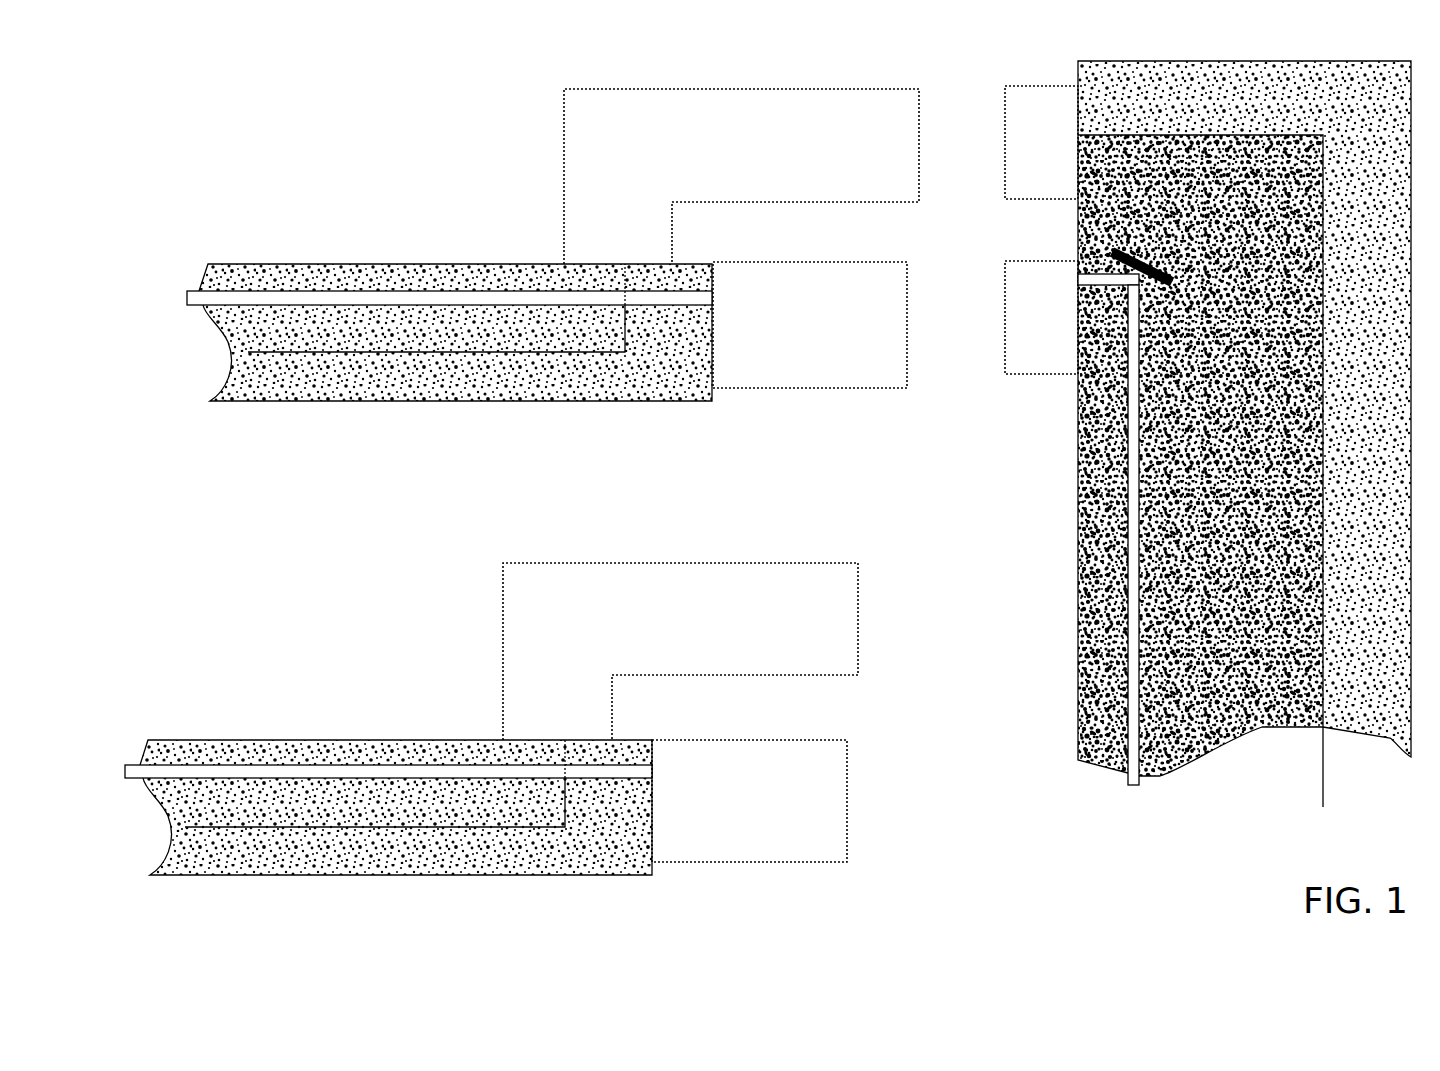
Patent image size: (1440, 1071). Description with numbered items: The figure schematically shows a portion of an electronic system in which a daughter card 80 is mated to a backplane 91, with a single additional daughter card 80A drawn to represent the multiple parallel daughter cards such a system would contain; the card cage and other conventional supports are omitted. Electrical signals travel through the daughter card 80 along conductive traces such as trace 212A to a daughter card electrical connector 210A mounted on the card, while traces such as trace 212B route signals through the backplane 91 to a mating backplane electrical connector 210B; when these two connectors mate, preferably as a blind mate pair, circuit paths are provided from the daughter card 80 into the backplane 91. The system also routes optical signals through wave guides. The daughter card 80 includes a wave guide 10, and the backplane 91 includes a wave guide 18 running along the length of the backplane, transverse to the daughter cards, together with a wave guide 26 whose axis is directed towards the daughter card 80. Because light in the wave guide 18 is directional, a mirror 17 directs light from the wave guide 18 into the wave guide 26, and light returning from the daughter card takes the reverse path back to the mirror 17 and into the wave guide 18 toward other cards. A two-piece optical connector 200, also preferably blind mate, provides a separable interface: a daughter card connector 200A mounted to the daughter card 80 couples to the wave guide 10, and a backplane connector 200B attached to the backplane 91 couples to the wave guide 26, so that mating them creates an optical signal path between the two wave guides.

The wave guide 10 is at (187, 315).
The daughter card 80 is at (382, 263).
The additional daughter card 80A is at (320, 740).
The backplane 91 is at (1128, 61).
The wave guide 18 is at (1130, 787).
The wave guide 26 is at (1102, 273).
The mirror 17 is at (1175, 289).
The optical connector 200 is at (865, 400).
The daughter card connector 200A is at (822, 388).
The backplane connector 200B is at (1012, 357).
The daughter card electrical connector 210A is at (625, 88).
The backplane electrical connector 210B is at (1032, 88).
The conductive trace 212A is at (453, 353).
The conductive trace 212B is at (1323, 758).